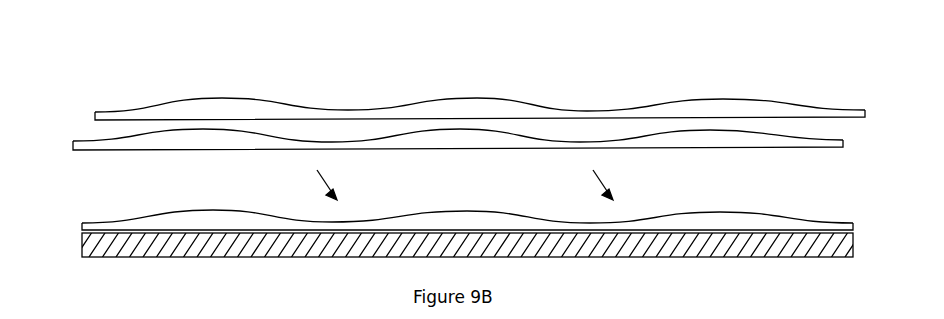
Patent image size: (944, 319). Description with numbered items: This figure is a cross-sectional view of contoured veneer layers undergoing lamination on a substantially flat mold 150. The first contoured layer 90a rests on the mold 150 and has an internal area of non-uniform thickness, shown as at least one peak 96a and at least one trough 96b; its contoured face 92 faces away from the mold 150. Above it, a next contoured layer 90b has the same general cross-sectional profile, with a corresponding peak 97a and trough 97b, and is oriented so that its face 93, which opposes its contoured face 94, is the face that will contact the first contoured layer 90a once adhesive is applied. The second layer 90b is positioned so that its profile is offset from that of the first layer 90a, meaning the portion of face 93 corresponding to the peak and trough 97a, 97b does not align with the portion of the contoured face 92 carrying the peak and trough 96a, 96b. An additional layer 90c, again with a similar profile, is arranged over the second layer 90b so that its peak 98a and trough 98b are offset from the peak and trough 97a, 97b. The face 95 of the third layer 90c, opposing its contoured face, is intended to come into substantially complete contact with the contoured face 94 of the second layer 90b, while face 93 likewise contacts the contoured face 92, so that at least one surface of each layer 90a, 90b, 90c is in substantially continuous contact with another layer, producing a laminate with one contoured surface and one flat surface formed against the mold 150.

The first contoured layer 90a is at (812, 222).
The next contoured layer 90b is at (818, 144).
The additional layer 90c is at (797, 108).
The contoured face 92 is at (687, 213).
The face 93 is at (763, 148).
The contoured face 94 is at (682, 132).
The face 95 is at (588, 118).
The peak 96a is at (213, 210).
The trough 96b is at (332, 222).
The peak 97a is at (203, 129).
The trough 97b is at (332, 142).
The peak 98a is at (222, 98).
The trough 98b is at (348, 110).
The mold 150 is at (733, 255).